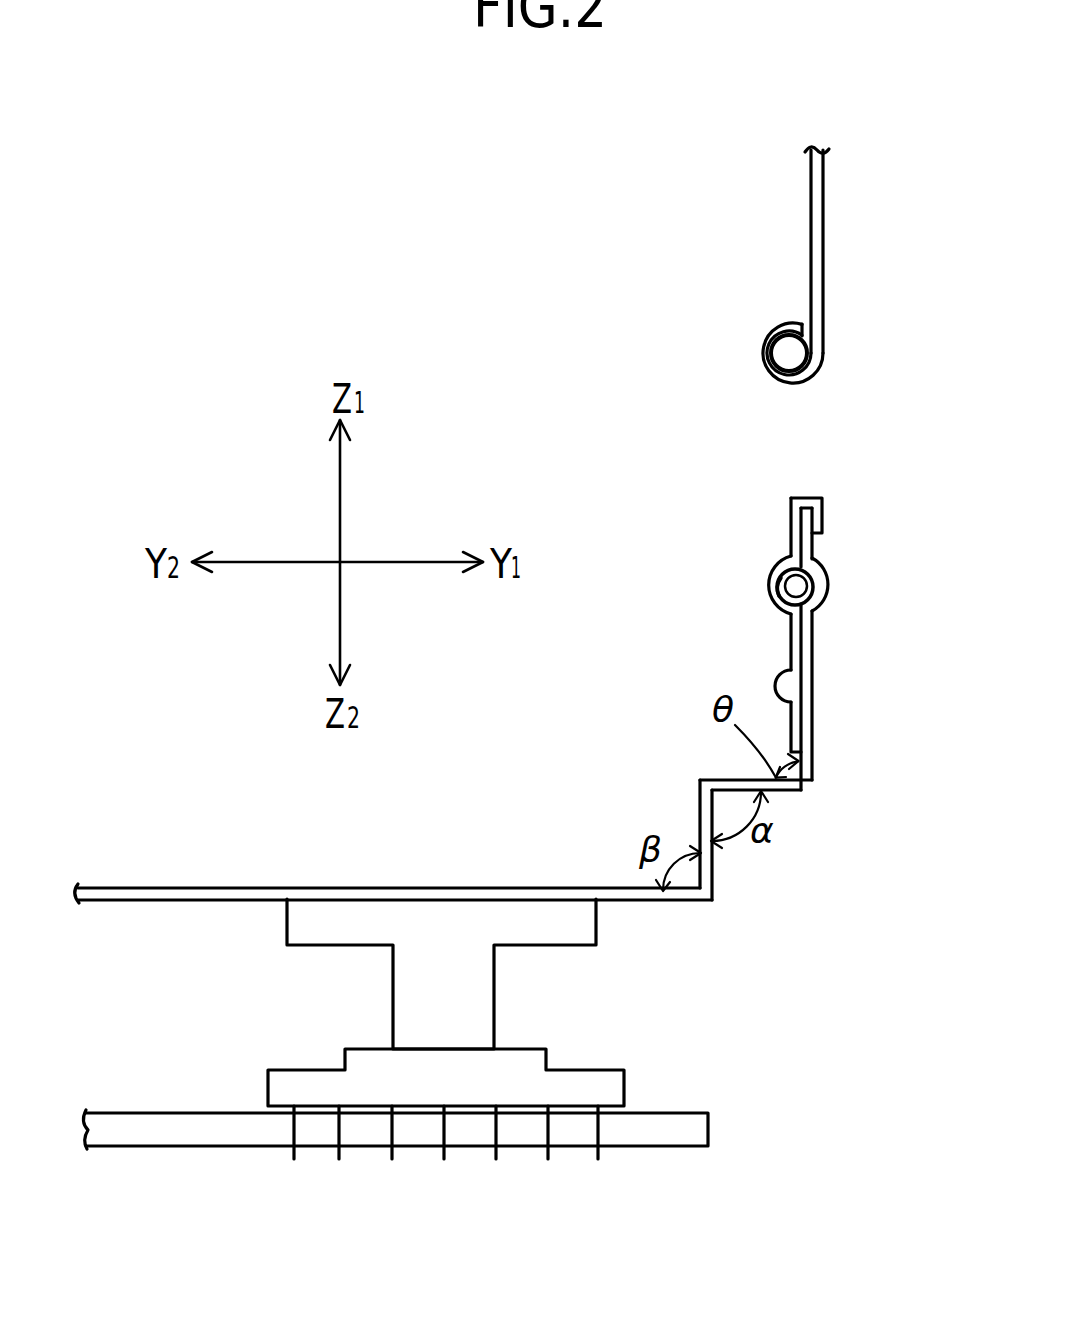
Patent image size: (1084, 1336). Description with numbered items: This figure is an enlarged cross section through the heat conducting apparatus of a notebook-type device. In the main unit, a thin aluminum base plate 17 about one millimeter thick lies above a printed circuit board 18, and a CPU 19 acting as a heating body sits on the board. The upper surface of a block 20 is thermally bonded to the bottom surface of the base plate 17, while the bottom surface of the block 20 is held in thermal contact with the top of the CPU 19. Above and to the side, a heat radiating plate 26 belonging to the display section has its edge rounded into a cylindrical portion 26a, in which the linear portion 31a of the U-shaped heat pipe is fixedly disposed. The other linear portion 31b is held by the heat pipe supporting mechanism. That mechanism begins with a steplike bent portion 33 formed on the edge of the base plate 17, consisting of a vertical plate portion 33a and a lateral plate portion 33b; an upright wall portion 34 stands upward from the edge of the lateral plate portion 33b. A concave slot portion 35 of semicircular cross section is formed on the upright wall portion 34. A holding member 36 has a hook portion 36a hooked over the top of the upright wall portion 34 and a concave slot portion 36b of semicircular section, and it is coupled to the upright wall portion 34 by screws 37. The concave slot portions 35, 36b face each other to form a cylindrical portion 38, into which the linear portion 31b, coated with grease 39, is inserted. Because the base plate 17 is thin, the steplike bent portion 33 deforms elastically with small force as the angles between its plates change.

The base plate 17 is at (172, 898).
The printed circuit board 18 is at (680, 1133).
The CPU 19 is at (581, 1082).
The block 20 is at (392, 980).
The heat radiating plate 26 is at (826, 227).
The cylindrical portion 26a is at (773, 343).
The linear portion 31a is at (786, 356).
The linear portion 31b is at (807, 572).
The steplike bent portion 33 is at (723, 804).
The vertical plate portion 33a is at (700, 810).
The lateral plate portion 33b is at (720, 780).
The upright wall portion 34 is at (814, 670).
The concave slot portion 35 is at (814, 590).
The holding member 36 is at (789, 530).
The hook portion 36a is at (818, 497).
The concave slot portion 36b is at (767, 578).
The screws 37 is at (778, 678).
The cylindrical portion 38 is at (829, 601).
The grease 39 is at (776, 596).